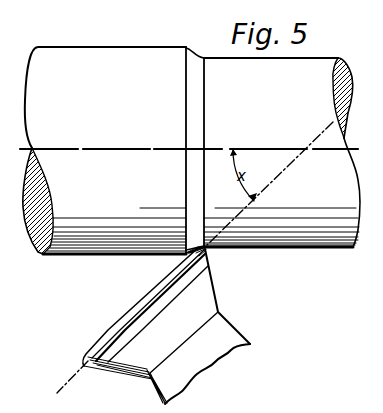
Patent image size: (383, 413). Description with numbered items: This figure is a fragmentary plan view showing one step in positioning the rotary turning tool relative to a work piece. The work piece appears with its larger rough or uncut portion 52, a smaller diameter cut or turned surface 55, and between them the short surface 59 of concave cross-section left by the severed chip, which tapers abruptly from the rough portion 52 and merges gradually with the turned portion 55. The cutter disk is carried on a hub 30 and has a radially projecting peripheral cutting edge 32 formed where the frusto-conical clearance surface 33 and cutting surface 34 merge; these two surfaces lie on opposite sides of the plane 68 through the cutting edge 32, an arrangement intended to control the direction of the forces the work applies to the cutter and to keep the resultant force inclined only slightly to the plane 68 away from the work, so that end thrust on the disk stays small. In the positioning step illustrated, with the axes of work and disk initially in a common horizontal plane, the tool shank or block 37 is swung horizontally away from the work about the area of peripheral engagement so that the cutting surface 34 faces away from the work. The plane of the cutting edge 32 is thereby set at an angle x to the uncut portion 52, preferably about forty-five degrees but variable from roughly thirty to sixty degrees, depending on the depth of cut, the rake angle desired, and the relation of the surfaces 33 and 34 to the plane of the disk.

The hub 30 is at (177, 325).
The peripheral cutting edge 32 is at (133, 315).
The clearance surface 33 is at (157, 288).
The cutting surface 34 is at (205, 262).
The tool shank 37 is at (231, 335).
The rough portion of the work piece 52 is at (127, 46).
The turned surface 55 is at (322, 58).
The surface of concave cross-section 59 is at (199, 55).
The plane through the cutting edge 68 is at (79, 371).